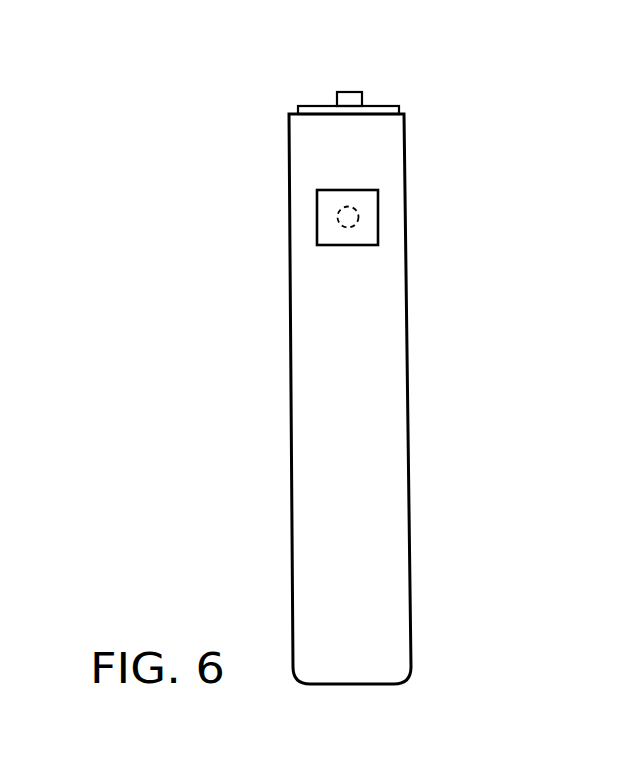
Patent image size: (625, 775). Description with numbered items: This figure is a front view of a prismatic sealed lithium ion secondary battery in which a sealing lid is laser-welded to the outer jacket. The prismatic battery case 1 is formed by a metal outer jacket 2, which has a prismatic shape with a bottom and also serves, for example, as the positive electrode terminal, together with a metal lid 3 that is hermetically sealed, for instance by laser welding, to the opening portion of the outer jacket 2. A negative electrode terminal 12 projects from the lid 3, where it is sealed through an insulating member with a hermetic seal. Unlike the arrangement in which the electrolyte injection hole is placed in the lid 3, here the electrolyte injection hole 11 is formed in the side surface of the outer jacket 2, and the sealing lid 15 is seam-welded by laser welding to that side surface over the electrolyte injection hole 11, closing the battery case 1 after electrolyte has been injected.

The prismatic battery case 1 is at (385, 383).
The outer jacket 2 is at (397, 143).
The lid 3 is at (374, 101).
The liquid injection hole 11 is at (357, 213).
The negative electrode terminal 12 is at (352, 103).
The sealing lid 15 is at (377, 234).